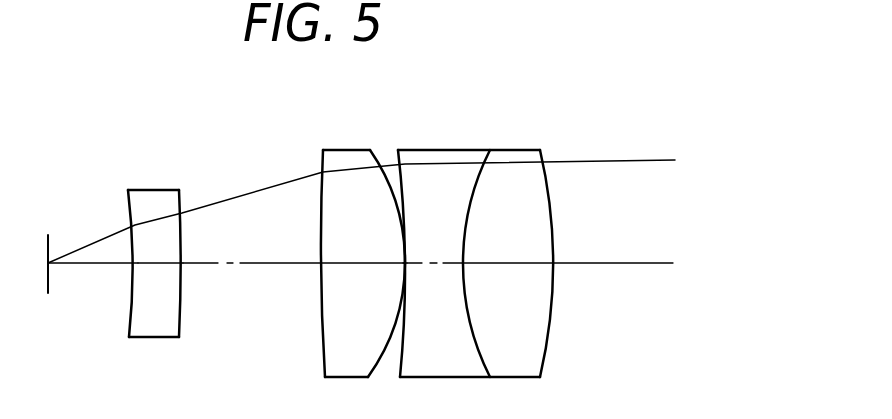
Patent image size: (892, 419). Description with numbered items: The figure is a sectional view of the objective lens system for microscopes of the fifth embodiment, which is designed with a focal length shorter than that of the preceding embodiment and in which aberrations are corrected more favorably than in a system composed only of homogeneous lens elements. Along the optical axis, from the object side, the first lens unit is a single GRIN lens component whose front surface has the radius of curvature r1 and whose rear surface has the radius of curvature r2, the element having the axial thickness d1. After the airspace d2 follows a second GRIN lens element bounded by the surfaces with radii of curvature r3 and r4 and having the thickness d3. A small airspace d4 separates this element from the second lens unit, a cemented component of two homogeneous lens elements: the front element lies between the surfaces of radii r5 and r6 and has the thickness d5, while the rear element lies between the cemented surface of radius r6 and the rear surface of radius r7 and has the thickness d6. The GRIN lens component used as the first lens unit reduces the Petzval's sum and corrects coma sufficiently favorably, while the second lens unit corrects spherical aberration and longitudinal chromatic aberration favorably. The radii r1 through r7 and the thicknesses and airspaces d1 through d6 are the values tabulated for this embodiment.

The radius of curvature of first surface r1 is at (131, 208).
The radius of curvature of second surface r2 is at (181, 207).
The radius of curvature of third surface r3 is at (324, 167).
The radius of curvature of fourth surface r4 is at (394, 168).
The radius of curvature of fifth surface r5 is at (412, 168).
The radius of curvature of sixth surface r6 is at (481, 170).
The radius of curvature of seventh surface r7 is at (560, 175).
The thickness of first lens element d1 is at (152, 265).
The airspace between first and second lens elements d2 is at (247, 266).
The thickness of second lens element d3 is at (347, 264).
The airspace between second lens element and cemented component d4 is at (405, 265).
The thickness of third lens element d5 is at (452, 265).
The thickness of fourth lens element d6 is at (515, 265).